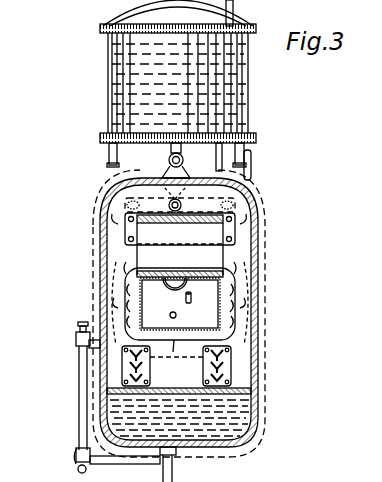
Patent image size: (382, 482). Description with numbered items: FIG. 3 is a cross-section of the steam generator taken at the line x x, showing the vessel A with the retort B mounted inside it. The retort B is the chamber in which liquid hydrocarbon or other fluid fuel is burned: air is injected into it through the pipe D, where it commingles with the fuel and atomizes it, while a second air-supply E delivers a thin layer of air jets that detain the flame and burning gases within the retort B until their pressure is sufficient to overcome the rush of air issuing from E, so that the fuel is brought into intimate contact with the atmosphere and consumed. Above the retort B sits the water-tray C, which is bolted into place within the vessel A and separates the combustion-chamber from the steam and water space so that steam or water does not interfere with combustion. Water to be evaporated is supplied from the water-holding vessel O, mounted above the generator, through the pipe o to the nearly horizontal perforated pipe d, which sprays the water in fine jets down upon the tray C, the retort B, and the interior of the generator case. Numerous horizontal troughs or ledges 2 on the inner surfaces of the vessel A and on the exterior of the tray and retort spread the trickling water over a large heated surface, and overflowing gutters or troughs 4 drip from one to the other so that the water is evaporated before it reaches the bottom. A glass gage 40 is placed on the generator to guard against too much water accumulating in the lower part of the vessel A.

The water-holding vessel O is at (178, 90).
The pipe o is at (169, 160).
The vessel A is at (101, 262).
The pipe d is at (180, 199).
The water-tray C is at (180, 277).
The retort B is at (134, 300).
The second air-supply E is at (193, 292).
The air pipe D is at (179, 317).
The horizontal troughs or ledges 2 is at (124, 288).
The gutters or troughs 4 is at (142, 374).
The glass gage 40 is at (78, 397).